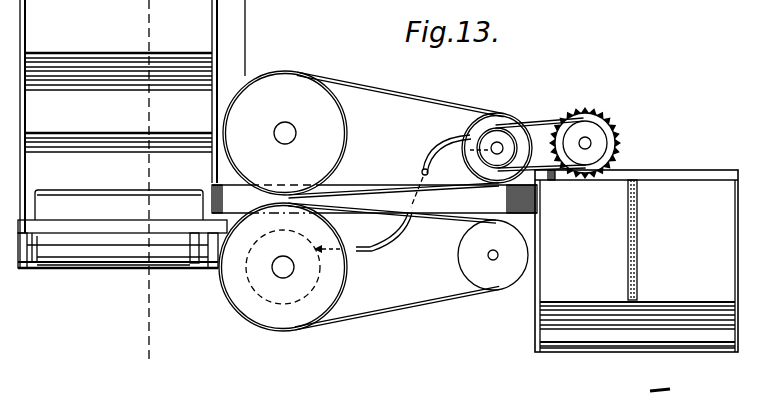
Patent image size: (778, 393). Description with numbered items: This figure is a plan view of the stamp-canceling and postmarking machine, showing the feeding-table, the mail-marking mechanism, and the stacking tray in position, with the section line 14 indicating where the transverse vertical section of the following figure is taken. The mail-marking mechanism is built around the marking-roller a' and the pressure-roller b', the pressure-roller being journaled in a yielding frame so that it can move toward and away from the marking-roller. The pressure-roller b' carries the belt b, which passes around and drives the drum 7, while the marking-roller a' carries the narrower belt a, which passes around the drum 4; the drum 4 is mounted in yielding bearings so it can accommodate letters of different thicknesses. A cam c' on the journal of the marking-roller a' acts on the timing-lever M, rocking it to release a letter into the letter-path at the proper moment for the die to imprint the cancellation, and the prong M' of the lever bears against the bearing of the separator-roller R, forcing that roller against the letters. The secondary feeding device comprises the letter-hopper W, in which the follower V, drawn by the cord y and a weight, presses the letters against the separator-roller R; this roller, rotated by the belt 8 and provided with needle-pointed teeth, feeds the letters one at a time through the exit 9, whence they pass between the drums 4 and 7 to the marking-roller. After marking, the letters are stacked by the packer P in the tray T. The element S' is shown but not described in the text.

The screen frame S' is at (132, 134).
The packer P is at (107, 202).
The tray T is at (105, 228).
The section line 14 is at (103, 345).
The pressure-roller b' is at (285, 133).
The belt b is at (396, 134).
The drum 7 is at (497, 148).
The exit 9 is at (497, 150).
The belt 8 is at (524, 130).
The separator-roller R is at (612, 129).
The prong of the timing-lever M' is at (495, 129).
The timing-lever M is at (368, 215).
The marking-roller a' is at (283, 267).
The cam c' is at (289, 267).
The belt a is at (394, 270).
The drum 4 is at (493, 255).
The letter-hopper W is at (636, 261).
The cord y is at (634, 264).
The follower V is at (678, 314).